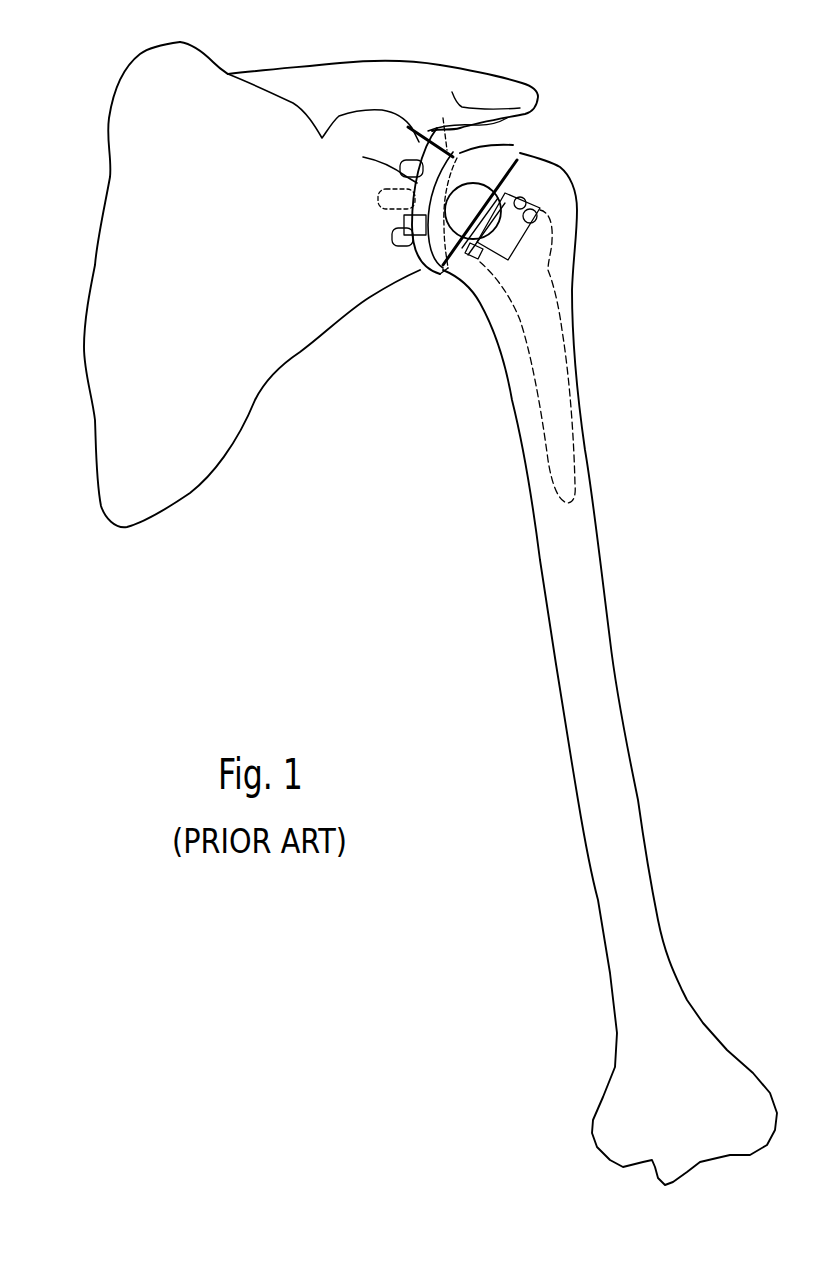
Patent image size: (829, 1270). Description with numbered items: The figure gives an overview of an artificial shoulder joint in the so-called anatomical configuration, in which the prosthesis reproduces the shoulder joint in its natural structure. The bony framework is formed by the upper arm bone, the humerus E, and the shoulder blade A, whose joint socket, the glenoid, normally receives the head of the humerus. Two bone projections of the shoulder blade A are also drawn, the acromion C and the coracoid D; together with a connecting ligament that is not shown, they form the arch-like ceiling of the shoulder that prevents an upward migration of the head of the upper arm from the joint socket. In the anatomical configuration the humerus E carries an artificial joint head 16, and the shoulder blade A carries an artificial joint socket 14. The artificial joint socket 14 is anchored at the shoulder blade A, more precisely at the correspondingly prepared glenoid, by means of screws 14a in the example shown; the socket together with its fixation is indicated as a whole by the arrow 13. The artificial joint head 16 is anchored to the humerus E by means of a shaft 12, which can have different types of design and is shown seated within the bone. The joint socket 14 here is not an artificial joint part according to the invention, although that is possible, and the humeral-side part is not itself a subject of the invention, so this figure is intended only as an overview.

The shaft 12 is at (550, 415).
The glenoid component assembly 13 is at (394, 218).
The artificial joint socket 14 is at (419, 260).
The screws 14a is at (403, 163).
The artificial joint head 16 is at (517, 160).
The shoulder blade A is at (117, 320).
The acromion C is at (507, 91).
The coracoid D is at (418, 150).
The humerus E is at (598, 580).